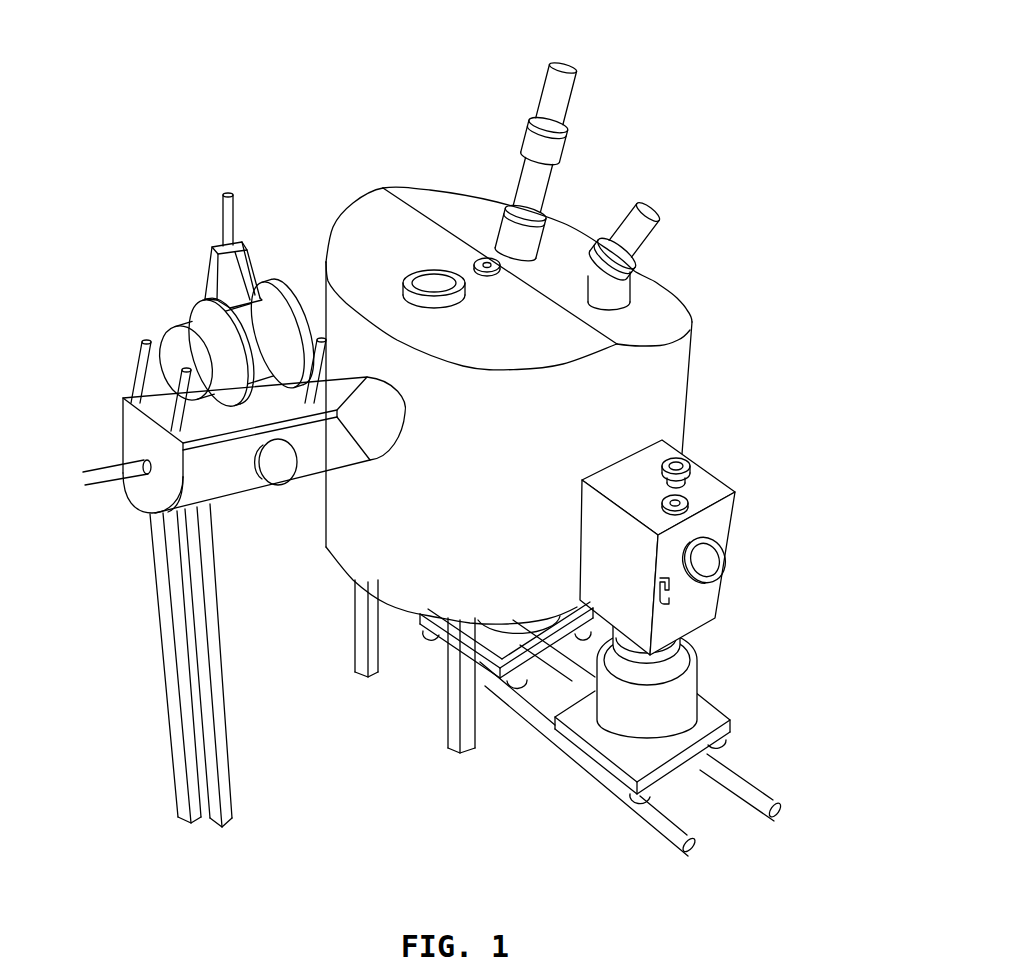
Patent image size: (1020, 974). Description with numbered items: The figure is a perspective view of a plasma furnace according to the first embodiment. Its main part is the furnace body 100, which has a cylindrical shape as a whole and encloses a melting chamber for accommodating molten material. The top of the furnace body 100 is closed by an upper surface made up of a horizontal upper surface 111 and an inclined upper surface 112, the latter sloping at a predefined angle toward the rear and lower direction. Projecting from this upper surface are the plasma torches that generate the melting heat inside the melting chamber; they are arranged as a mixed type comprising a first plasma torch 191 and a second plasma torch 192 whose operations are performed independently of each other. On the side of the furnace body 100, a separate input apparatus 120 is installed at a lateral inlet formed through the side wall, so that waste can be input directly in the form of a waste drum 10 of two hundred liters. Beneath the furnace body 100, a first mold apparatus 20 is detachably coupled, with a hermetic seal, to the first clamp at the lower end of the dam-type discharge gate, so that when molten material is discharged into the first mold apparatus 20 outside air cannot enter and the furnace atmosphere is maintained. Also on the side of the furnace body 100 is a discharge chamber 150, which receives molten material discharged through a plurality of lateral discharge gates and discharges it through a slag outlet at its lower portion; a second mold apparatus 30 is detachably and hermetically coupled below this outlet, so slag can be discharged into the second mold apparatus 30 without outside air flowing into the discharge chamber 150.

The furnace body 100 is at (722, 356).
The horizontal upper surface 111 is at (357, 225).
The inclined upper surface 112 is at (440, 203).
The first plasma torch 191 is at (643, 233).
The second plasma torch 192 is at (565, 95).
The discharge chamber 150 is at (722, 530).
The second mold apparatus 30 is at (680, 705).
The first mold apparatus 20 is at (498, 630).
The waste drum 10 is at (195, 320).
The input apparatus 120 is at (245, 497).